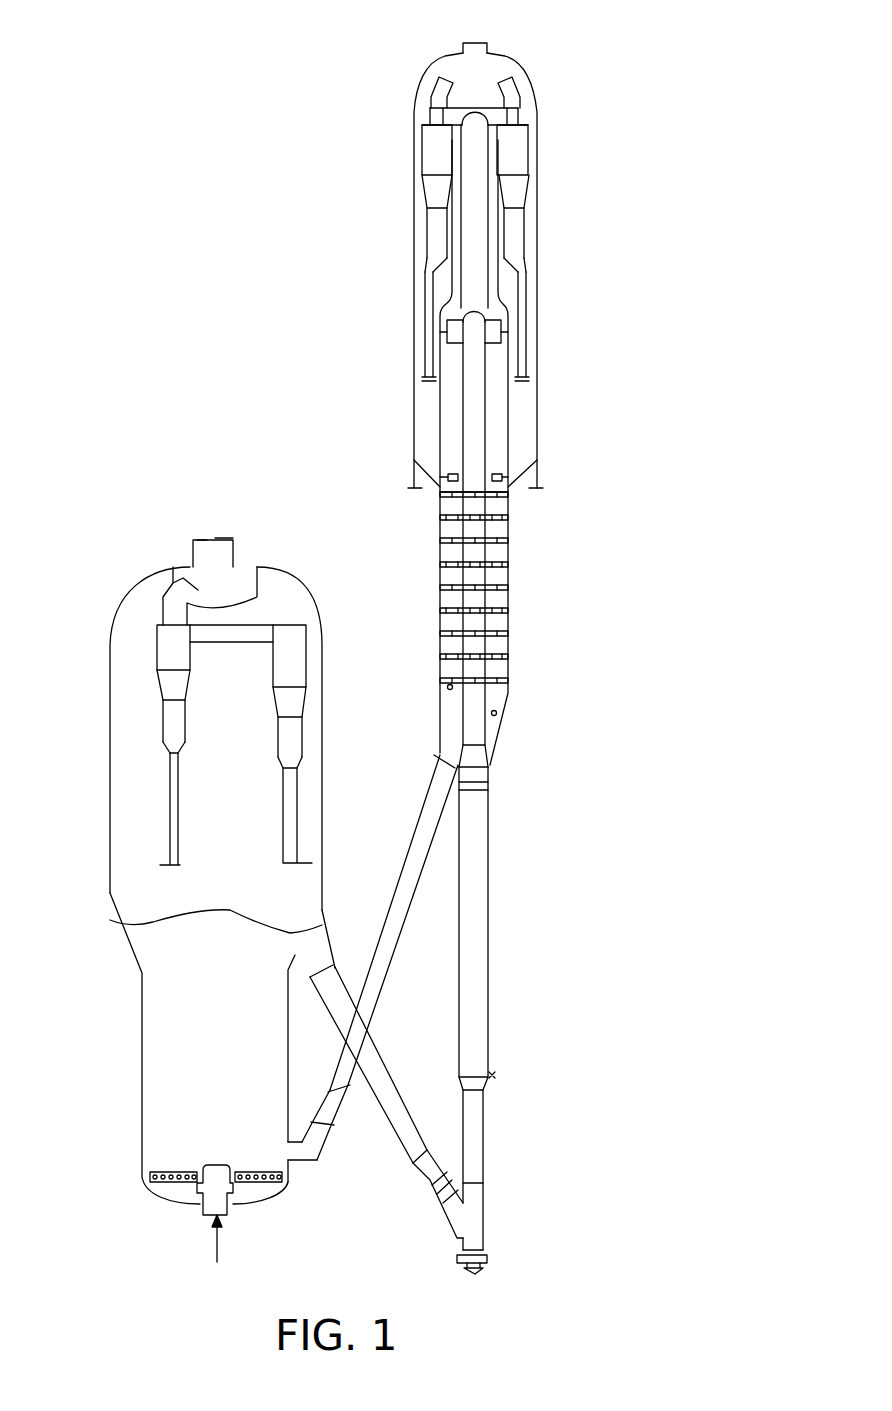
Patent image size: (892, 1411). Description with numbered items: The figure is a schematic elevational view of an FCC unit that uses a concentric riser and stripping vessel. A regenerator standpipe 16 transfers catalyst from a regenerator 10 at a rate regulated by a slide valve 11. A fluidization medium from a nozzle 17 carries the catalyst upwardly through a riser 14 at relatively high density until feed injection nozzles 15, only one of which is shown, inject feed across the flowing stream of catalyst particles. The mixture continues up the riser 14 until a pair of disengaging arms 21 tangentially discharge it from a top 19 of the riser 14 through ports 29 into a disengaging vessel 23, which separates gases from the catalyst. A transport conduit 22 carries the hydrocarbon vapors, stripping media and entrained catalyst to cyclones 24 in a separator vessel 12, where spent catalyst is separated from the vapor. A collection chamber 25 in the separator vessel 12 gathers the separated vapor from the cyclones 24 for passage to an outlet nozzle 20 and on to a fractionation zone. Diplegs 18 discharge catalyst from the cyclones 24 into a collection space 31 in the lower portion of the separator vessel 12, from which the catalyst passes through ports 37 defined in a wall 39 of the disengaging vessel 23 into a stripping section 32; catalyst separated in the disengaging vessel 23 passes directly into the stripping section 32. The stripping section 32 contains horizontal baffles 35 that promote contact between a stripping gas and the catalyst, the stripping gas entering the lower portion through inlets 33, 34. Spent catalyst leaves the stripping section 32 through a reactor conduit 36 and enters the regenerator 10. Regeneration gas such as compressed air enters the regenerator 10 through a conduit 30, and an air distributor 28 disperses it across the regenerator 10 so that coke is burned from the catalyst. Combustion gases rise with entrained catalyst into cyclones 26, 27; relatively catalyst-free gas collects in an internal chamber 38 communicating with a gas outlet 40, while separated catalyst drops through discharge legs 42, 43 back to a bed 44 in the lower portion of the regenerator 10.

The regenerator 10 is at (120, 687).
The slide valve 11 is at (425, 1183).
The separator vessel 12 is at (537, 172).
The riser 14 is at (490, 873).
The feed injection nozzles 15 is at (493, 1075).
The regenerator standpipe 16 is at (400, 1143).
The nozzle 17 is at (482, 1270).
The diplegs 18 is at (428, 310).
The top of the riser 19 is at (480, 315).
The outlet nozzle 20 is at (488, 48).
The disengaging arms 21 is at (493, 345).
The transport conduit 22 is at (492, 230).
The disengaging vessel 23 is at (500, 442).
The cyclones 24 is at (435, 147).
The collection chamber 25 is at (468, 70).
The cyclone 26 is at (290, 670).
The cyclone 27 is at (173, 717).
The air distributor 28 is at (213, 1193).
The ports 29 is at (500, 337).
The conduit 30 is at (213, 1247).
The collection space 31 is at (425, 413).
The stripping section 32 is at (438, 597).
The inlet 33 is at (448, 688).
The inlet 34 is at (497, 716).
The baffles 35 is at (492, 572).
The reactor conduit 36 is at (435, 768).
The ports 37 is at (445, 480).
The internal chamber 38 is at (228, 578).
The wall 39 is at (440, 430).
The gas outlet 40 is at (205, 548).
The discharge leg 42 is at (287, 835).
The discharge leg 43 is at (173, 800).
The bed 44 is at (155, 1133).